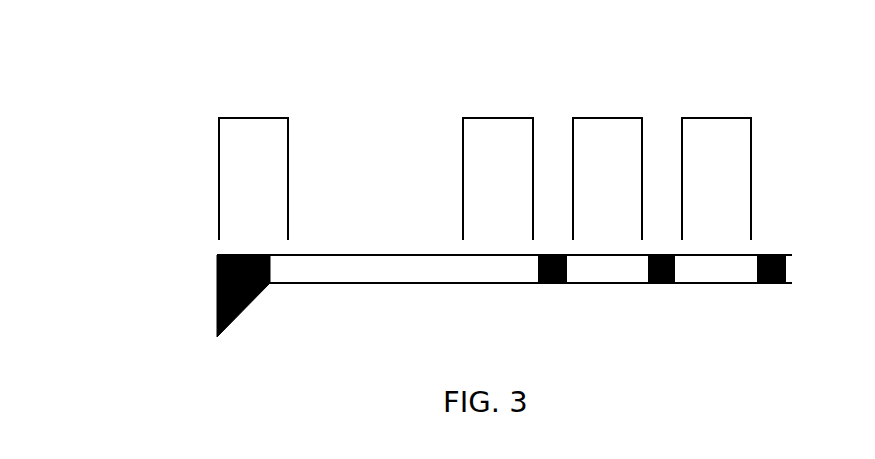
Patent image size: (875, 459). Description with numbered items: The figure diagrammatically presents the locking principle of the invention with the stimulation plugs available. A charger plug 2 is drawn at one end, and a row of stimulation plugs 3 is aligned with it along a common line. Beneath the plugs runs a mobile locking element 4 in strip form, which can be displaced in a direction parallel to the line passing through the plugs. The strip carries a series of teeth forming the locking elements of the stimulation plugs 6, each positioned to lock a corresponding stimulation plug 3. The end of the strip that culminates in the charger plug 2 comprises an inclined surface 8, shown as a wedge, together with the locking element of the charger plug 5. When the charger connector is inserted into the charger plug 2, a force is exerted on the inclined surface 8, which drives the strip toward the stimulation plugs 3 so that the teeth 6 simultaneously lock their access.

The charger plug 2 is at (237, 118).
The stimulation plug 3 is at (520, 118).
The mobile locking element 4 is at (419, 283).
The locking element of the charger plug 5 is at (203, 303).
The locking element of the stimulation plug 6 is at (560, 283).
The inclined surface 8 is at (250, 305).